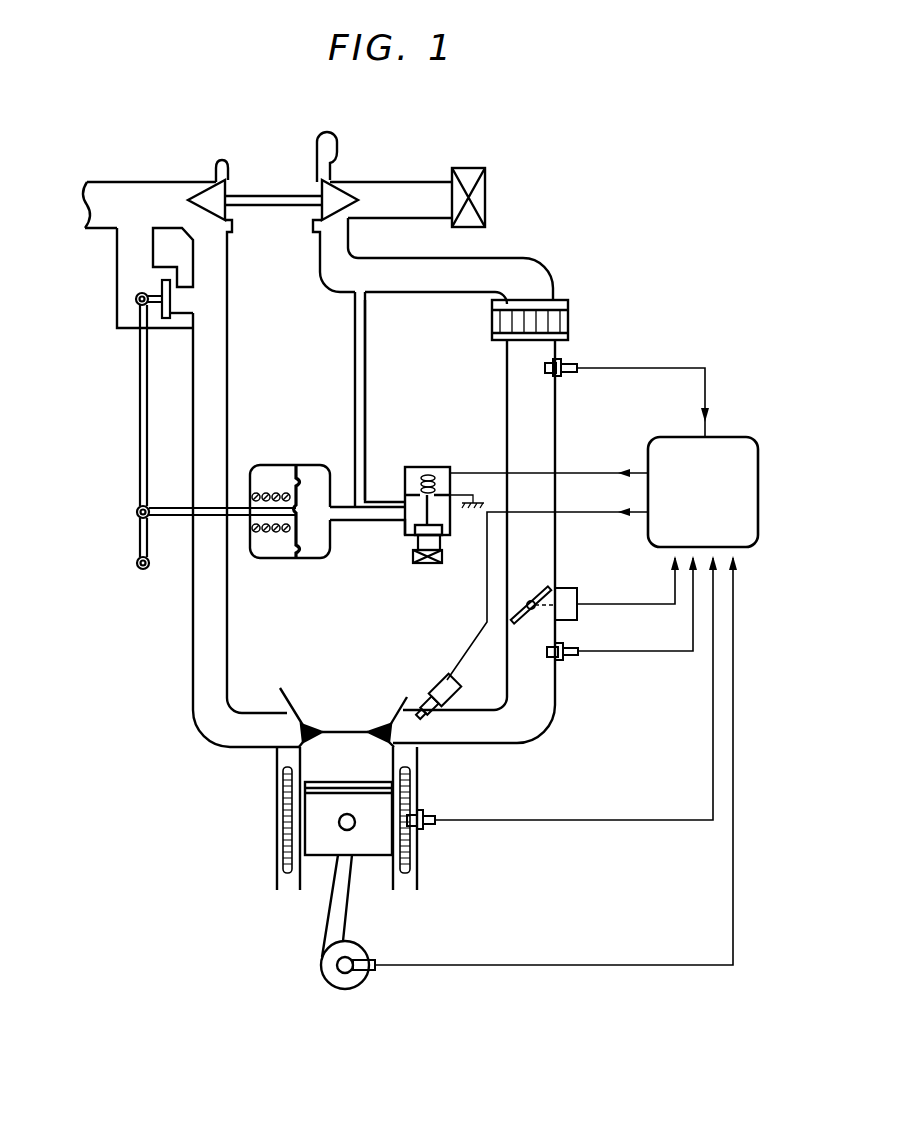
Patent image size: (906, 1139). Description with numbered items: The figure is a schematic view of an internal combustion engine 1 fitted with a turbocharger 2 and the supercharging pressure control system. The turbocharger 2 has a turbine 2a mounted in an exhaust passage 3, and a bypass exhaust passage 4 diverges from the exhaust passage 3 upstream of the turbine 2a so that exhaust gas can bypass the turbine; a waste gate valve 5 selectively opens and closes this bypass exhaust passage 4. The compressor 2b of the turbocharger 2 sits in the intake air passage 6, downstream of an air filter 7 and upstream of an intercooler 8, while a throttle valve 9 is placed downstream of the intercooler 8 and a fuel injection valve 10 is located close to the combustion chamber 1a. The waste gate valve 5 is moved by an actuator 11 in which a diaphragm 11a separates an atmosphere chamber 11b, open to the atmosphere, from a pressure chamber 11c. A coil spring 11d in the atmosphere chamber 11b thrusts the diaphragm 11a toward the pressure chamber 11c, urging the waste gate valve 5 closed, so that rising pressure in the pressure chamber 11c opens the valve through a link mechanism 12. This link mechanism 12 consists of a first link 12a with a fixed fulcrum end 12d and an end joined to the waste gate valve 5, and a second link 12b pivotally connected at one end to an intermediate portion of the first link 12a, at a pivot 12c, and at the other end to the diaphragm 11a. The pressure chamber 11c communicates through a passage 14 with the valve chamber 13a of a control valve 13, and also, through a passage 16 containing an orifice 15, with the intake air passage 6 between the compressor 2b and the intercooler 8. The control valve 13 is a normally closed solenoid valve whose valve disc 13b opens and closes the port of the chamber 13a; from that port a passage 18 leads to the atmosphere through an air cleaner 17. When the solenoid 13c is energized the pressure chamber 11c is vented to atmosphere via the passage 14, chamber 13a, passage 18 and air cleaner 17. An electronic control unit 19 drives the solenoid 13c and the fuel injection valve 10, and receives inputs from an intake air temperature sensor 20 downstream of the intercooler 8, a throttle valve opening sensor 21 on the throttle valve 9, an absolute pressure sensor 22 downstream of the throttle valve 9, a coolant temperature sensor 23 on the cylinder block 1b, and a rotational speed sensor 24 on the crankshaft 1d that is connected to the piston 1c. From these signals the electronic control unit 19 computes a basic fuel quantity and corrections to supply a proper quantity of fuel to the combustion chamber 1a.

The internal combustion engine 1 is at (343, 839).
The combustion chamber 1a is at (300, 762).
The cylinder block 1b is at (414, 857).
The piston 1c is at (368, 845).
The crankshaft 1d is at (338, 967).
The turbocharger 2 is at (267, 166).
The turbine 2a is at (210, 198).
The compressor 2b is at (336, 198).
The exhaust passage 3 is at (200, 625).
The bypass exhaust passage 4 is at (135, 258).
The waste gate valve 5 is at (167, 320).
The intake air passage 6 is at (532, 272).
The air filter 7 is at (469, 178).
The intercooler 8 is at (566, 305).
The throttle valve 9 is at (545, 592).
The fuel injection valve 10 is at (438, 680).
The actuator 11 is at (287, 496).
The diaphragm 11a is at (300, 548).
The atmosphere chamber 11b is at (268, 548).
The pressure chamber 11c is at (316, 478).
The coil spring 11d is at (266, 492).
The link mechanism 12 is at (176, 457).
The first link 12a is at (140, 427).
The second link 12b is at (170, 506).
The pivot 12c is at (136, 513).
The fixed fulcrum end 12d is at (139, 568).
The control valve 13 is at (423, 479).
The valve chamber 13a is at (416, 510).
The valve disc 13b is at (414, 530).
The solenoid 13c is at (434, 478).
The passage 14 is at (350, 528).
The orifice 15 is at (352, 368).
The passage 16 is at (367, 405).
The air cleaner 17 is at (426, 564).
The passage 18 is at (437, 545).
The electronic control unit 19 is at (675, 445).
The intake air temperature sensor 20 is at (570, 376).
The throttle valve opening sensor 21 is at (565, 590).
The absolute pressure sensor 22 is at (573, 660).
The engine coolant temperature sensor 23 is at (430, 816).
The engine rotational speed sensor 24 is at (372, 963).